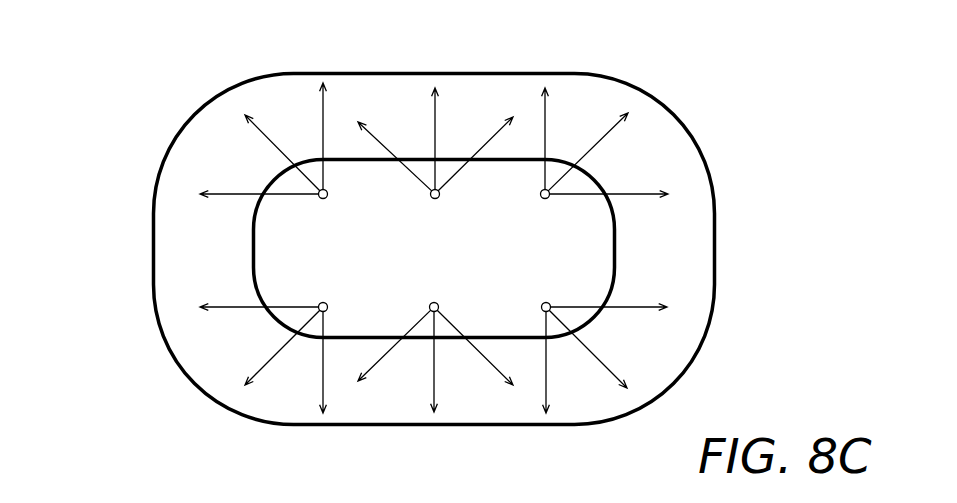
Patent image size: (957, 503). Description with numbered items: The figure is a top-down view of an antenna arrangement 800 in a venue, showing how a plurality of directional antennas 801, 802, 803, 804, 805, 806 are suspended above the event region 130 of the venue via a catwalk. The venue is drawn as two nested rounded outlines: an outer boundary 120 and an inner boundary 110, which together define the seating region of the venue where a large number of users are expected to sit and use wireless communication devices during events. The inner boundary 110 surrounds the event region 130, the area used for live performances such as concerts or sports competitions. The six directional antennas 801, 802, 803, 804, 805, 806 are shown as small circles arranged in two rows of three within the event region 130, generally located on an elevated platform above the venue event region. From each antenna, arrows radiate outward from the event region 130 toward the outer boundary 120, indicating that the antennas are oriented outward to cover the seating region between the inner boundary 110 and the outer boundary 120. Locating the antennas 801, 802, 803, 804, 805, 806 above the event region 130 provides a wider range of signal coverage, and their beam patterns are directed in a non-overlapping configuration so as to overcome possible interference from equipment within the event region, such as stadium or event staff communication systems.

The lighting arrangement 800 is at (122, 65).
The outer boundary 120 is at (710, 183).
The inner boundary 110 is at (258, 218).
The event region 130 is at (408, 243).
The directional antenna 801 is at (326, 197).
The directional antenna 802 is at (438, 197).
The directional antenna 803 is at (548, 198).
The directional antenna 804 is at (326, 303).
The directional antenna 805 is at (437, 303).
The directional antenna 806 is at (549, 303).